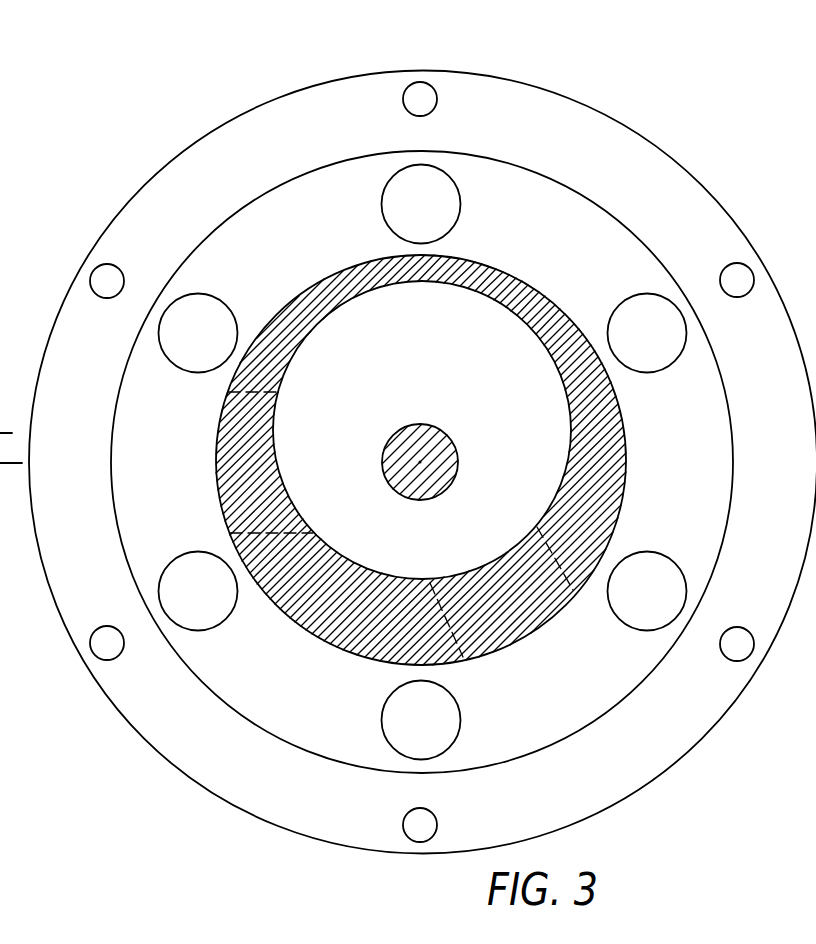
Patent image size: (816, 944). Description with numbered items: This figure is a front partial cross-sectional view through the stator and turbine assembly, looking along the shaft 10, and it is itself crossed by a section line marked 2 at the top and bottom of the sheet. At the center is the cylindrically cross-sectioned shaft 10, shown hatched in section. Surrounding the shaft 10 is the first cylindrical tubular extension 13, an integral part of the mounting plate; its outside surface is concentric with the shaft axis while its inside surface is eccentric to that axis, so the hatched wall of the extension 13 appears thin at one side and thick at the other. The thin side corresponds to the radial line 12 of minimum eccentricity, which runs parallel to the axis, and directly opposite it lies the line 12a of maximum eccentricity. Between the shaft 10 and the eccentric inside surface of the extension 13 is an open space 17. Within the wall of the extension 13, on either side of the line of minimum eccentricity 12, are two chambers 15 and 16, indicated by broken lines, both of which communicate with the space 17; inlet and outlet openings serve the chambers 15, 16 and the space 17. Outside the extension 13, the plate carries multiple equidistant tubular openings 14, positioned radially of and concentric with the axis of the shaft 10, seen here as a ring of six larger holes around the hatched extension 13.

The section line 2- 2 is at (419, 92).
The shaft 10 is at (455, 448).
The radial line of minimum eccentricity 12 is at (413, 577).
The line of maximum eccentricity 12a is at (400, 287).
The first cylindrical tubular extension 13 is at (343, 285).
The tubular openings 14 is at (432, 193).
The chamber 15 is at (240, 475).
The chamber 16 is at (515, 633).
The space 17 is at (431, 376).